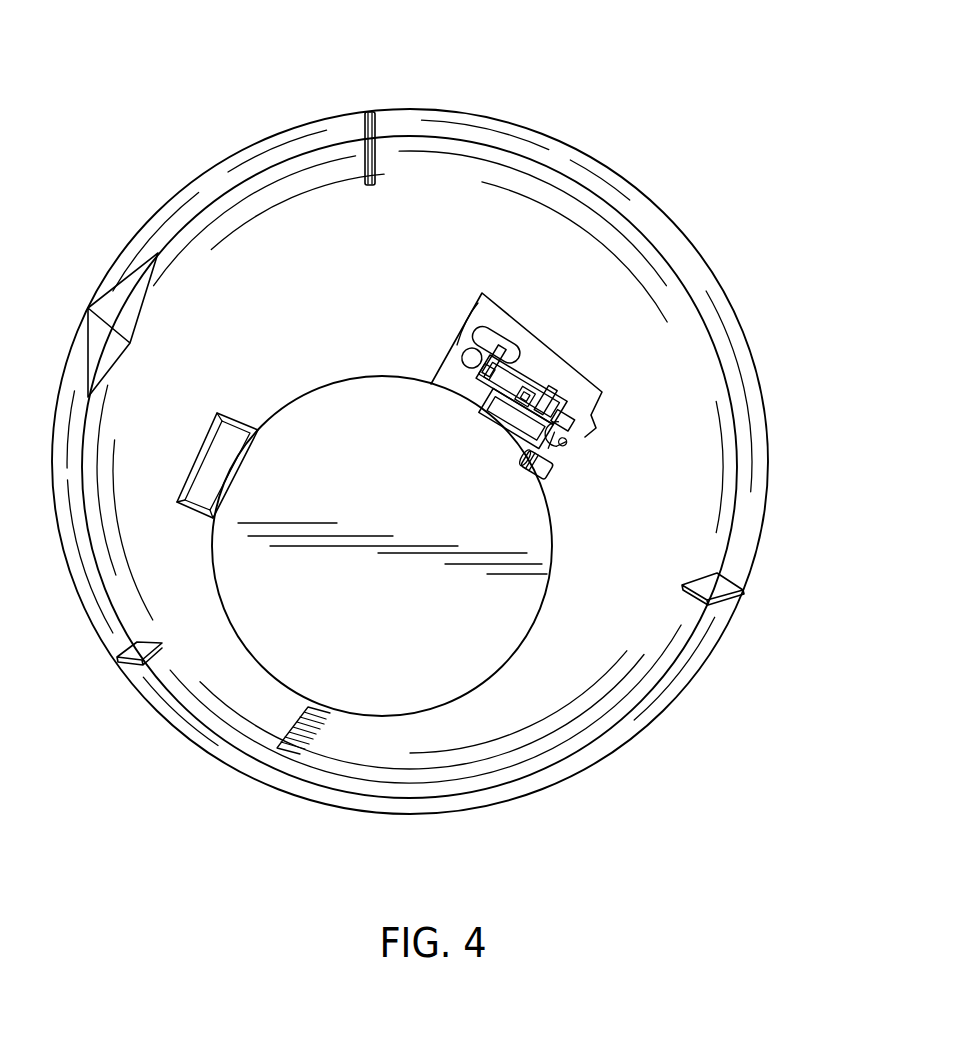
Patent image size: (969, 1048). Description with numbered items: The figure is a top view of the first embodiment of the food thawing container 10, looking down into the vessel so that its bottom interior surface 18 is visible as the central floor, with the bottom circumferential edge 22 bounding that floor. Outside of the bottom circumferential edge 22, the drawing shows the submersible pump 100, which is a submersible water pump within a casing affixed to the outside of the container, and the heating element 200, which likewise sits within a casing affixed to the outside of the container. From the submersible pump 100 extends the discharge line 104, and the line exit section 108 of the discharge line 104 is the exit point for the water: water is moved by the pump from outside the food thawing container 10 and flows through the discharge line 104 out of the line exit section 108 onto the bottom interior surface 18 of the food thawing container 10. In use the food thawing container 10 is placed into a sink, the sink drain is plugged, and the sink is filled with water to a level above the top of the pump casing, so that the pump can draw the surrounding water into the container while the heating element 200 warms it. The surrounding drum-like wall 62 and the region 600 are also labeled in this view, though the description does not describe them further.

The food thawing container 10 is at (381, 77).
The drum wall 62 is at (622, 179).
The bottom interior surface 18 is at (338, 473).
The bottom circumferential edge 22 is at (487, 685).
The tub interior region 600 is at (287, 600).
The heating element 200 is at (201, 427).
The submersible pump 100 is at (561, 351).
The discharge line 104 is at (569, 459).
The line exit section 108 is at (521, 471).